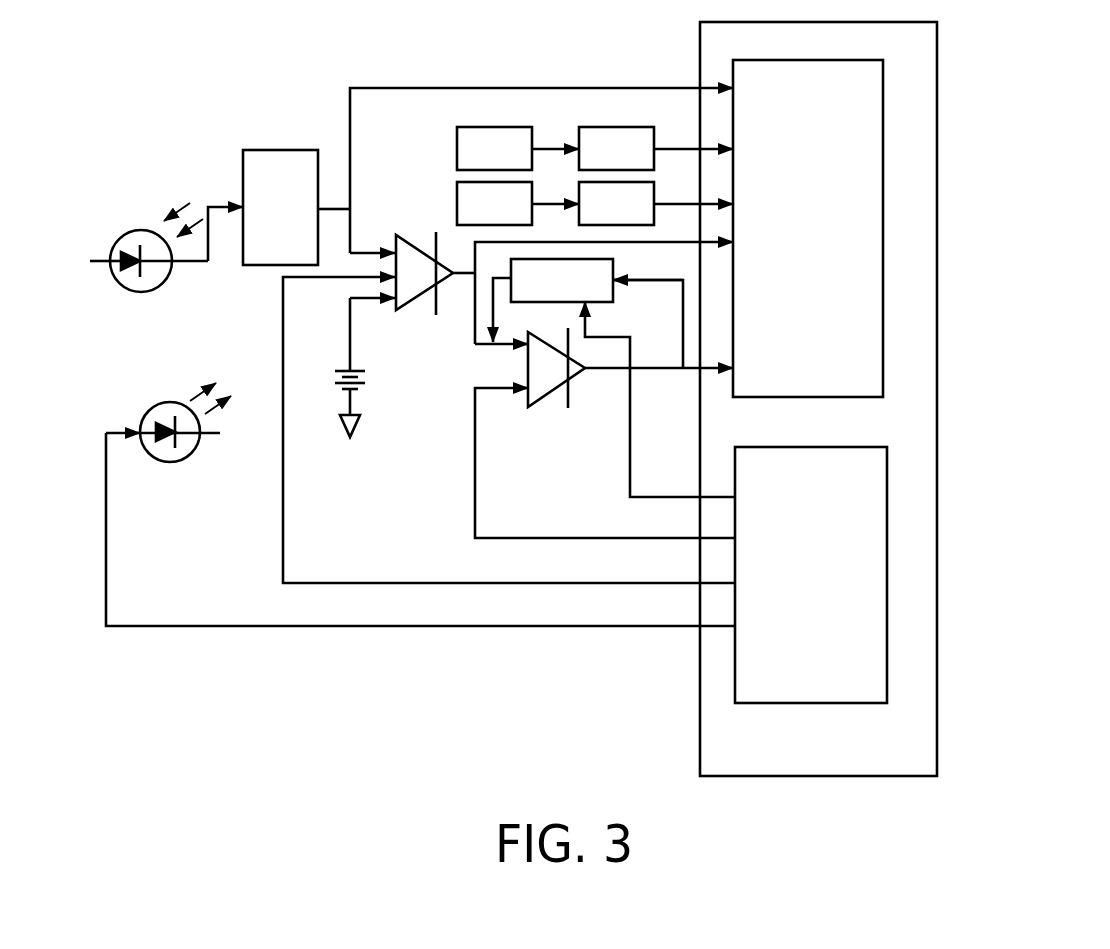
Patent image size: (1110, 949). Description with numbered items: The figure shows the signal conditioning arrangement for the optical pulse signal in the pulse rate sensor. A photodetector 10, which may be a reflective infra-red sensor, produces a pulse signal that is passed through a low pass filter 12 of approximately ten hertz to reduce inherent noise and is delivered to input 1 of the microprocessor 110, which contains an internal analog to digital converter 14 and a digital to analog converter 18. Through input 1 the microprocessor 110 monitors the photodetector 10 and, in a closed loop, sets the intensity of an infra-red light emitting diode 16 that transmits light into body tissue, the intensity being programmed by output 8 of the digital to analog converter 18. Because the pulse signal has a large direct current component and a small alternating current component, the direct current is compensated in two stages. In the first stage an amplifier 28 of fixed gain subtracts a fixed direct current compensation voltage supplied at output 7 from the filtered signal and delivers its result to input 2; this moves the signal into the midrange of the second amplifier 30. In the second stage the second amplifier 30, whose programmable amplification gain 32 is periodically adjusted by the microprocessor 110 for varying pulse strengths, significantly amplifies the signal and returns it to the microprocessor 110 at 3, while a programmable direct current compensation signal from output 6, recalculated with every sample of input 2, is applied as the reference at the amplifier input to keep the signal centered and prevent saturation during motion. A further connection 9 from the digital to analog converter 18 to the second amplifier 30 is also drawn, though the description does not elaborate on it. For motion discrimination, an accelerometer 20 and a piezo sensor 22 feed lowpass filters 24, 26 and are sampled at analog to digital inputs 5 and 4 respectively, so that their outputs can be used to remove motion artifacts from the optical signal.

The photodetector 10 is at (113, 232).
The low pass filter 12 is at (269, 219).
The analog to digital converter 14 is at (797, 249).
The infra-red light emitting diode 16 is at (197, 458).
The digital to analog converter 18 is at (798, 594).
The accelerometer 20 is at (481, 217).
The piezo sensor 22 is at (481, 162).
The lowpass filter 24 is at (603, 217).
The lowpass filter 26 is at (603, 162).
The amplifier 28 is at (401, 284).
The second amplifier 30 is at (534, 379).
The amplification gain 32 is at (549, 294).
The microprocessor 110 is at (878, 757).
The input 1 is at (525, 154).
The input 2 is at (593, 278).
The output 3 is at (659, 340).
The analog to digital input 4 is at (693, 132).
The analog to digital input 5 is at (693, 188).
The output 6 is at (605, 463).
The output 7 is at (509, 430).
The output 8 is at (420, 529).
The terminal 9 is at (660, 399).